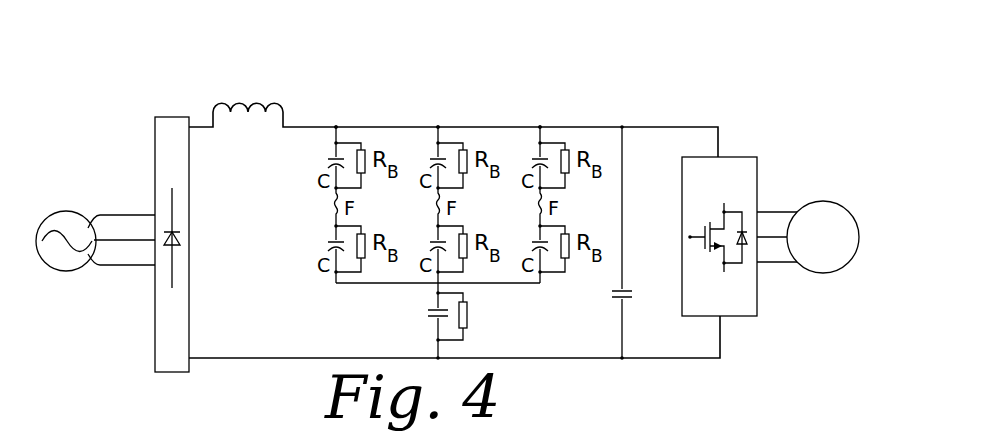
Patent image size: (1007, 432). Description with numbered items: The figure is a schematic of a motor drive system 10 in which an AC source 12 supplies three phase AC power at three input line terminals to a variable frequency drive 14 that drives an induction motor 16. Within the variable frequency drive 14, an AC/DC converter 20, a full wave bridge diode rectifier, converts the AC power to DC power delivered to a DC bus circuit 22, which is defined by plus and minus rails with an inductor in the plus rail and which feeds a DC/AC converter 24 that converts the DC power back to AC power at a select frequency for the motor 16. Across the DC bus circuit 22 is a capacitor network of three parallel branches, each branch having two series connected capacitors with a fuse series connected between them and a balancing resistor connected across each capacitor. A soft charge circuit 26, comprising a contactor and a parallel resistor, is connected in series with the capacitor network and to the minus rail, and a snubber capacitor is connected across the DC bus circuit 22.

The motor drive system 10 is at (576, 77).
The AC source 12 is at (67, 211).
The variable frequency drive 14 is at (785, 125).
The induction motor 16 is at (825, 201).
The AC/DC converter 20 is at (172, 117).
The DC bus circuit 22 is at (428, 103).
The DC/AC converter 24 is at (742, 157).
The soft charge circuit 26 is at (414, 340).